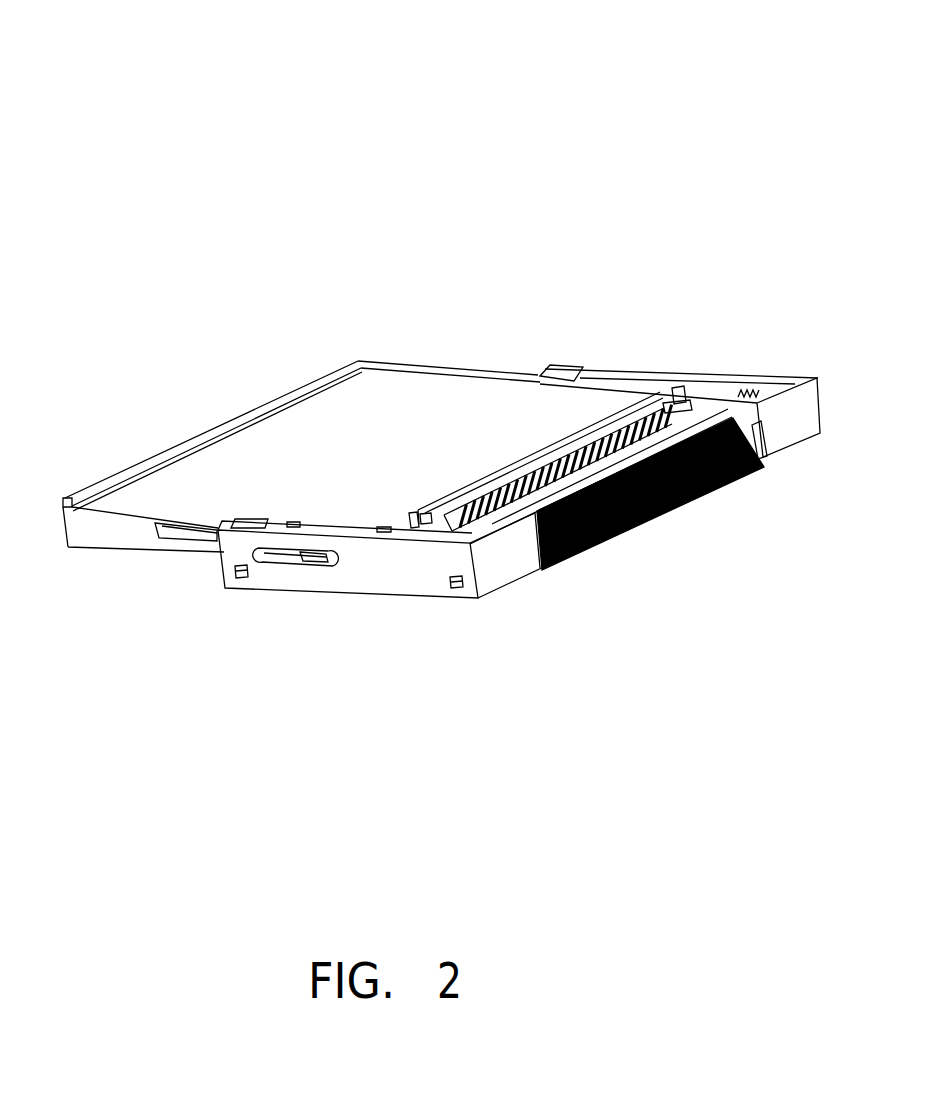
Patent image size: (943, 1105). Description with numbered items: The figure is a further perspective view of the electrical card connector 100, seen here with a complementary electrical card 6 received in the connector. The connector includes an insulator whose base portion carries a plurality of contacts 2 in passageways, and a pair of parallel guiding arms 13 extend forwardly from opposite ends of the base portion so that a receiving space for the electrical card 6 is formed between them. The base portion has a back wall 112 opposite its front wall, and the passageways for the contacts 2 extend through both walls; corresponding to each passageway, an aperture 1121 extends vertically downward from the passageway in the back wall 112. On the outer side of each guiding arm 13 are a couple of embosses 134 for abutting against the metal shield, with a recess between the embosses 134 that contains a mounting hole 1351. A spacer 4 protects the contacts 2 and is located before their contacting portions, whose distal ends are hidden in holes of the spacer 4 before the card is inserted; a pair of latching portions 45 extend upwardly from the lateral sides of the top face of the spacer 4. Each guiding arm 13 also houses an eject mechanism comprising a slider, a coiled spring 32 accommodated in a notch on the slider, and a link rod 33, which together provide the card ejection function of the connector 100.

The electrical card connector 100 is at (427, 23).
The electrical card 6 is at (150, 485).
The guiding arm 13 is at (381, 580).
The link rod 33 is at (318, 557).
The mounting hole 1351 is at (268, 566).
The emboss 134 is at (242, 581).
The latching portion 45 is at (409, 523).
The spacer 4 is at (497, 473).
The contact 2 is at (548, 568).
The aperture 1121 is at (703, 497).
The back wall 112 is at (765, 456).
The coiled spring 32 is at (748, 387).